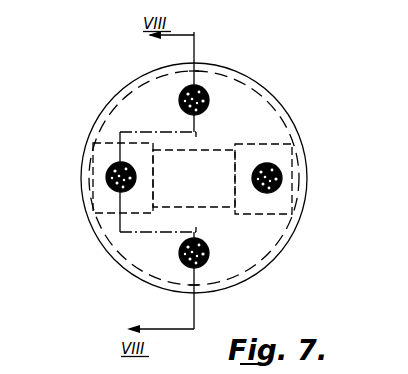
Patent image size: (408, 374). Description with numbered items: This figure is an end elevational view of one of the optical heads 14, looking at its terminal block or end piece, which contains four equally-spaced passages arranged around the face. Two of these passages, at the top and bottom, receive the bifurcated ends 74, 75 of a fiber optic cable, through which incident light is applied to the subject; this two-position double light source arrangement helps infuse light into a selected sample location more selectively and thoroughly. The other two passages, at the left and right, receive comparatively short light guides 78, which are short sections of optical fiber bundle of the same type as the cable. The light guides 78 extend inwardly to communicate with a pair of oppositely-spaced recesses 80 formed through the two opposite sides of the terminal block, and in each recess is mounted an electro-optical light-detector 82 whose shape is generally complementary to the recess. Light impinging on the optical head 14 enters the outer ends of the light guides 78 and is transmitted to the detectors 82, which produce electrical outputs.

The optical head 14 is at (197, 160).
The bifurcated end of fiber optic cable 74 is at (204, 88).
The bifurcated end of fiber optic cable 75 is at (212, 262).
The light guide 78 is at (108, 174).
The recess 80 is at (90, 147).
The electro-optical light-detector 82 is at (89, 207).